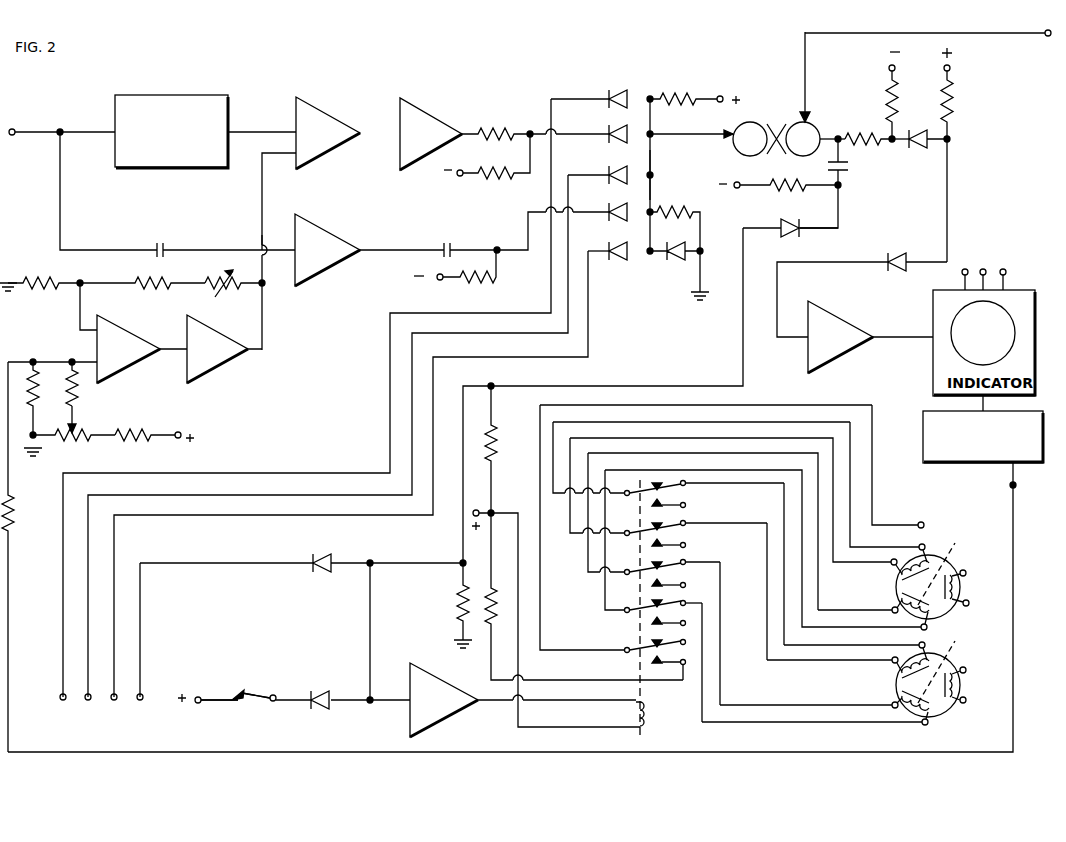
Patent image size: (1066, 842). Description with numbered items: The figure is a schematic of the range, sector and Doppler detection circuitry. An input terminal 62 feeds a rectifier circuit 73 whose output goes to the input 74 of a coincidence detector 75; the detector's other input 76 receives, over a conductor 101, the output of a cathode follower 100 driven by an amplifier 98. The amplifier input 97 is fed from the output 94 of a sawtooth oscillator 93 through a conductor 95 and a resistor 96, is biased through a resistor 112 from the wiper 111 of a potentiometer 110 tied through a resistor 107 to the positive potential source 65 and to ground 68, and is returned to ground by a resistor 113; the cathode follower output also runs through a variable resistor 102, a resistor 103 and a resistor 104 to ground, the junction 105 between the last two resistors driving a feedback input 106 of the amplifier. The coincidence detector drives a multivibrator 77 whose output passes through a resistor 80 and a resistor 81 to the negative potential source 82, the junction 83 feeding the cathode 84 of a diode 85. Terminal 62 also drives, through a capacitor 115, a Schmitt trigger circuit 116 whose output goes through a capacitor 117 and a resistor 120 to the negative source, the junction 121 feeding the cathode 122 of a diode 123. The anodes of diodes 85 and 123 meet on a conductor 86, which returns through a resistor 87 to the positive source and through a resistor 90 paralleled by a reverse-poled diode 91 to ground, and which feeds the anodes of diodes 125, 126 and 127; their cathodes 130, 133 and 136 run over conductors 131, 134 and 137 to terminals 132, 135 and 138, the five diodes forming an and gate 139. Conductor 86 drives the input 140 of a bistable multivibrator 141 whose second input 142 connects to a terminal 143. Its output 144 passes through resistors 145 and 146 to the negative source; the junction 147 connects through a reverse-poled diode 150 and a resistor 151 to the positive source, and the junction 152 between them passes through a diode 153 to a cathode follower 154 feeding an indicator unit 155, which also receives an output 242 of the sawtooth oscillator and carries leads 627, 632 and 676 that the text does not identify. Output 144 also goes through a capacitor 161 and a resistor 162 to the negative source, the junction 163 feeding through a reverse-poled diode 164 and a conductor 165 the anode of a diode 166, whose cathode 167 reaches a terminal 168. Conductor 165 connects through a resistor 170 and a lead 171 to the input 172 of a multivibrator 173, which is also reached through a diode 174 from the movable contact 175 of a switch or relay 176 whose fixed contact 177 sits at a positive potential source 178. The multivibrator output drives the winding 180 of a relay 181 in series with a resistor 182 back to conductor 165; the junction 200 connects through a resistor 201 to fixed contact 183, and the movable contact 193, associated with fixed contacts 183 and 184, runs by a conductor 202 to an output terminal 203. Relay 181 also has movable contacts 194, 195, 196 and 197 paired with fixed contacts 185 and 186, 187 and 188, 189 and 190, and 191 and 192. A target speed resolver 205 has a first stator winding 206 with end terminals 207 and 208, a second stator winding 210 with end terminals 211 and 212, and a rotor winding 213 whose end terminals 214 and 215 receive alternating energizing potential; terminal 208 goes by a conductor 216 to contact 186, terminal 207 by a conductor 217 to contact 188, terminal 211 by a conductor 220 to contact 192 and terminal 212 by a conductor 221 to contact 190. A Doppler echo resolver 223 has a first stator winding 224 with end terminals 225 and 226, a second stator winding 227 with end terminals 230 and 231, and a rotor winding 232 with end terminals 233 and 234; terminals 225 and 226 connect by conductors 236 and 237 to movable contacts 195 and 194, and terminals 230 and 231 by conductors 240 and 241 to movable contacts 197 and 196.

The terminal 62 is at (14, 128).
The rectifier circuit 73 is at (147, 95).
The input 74 is at (290, 128).
The coincidence detector 75 is at (298, 80).
The input 76 is at (294, 160).
The multivibrator 77 is at (420, 112).
The resistor 80 is at (495, 128).
The resistor 81 is at (494, 180).
The negative potential source 82 is at (890, 68).
The junction 83 is at (530, 130).
The cathode 84 is at (598, 132).
The diode 85 is at (614, 126).
The conductor 86 is at (674, 124).
The resistor 87 is at (674, 96).
The resistor 90 is at (669, 212).
The reverse-poled diode 91 is at (680, 260).
The sawtooth oscillator 93 is at (922, 432).
The output 94 is at (1010, 486).
The conductor 95 is at (1014, 535).
The resistor 96 is at (12, 510).
The input 97 is at (95, 358).
The amplifier 98 is at (138, 333).
The cathode follower 100 is at (207, 330).
The conductor 101 is at (260, 240).
The variable resistor 102 is at (213, 280).
The resistor 103 is at (142, 274).
The resistor 104 is at (45, 288).
The junction 105 is at (80, 280).
The feedback input 106 is at (84, 325).
The resistor 107 is at (126, 430).
The potentiometer 110 is at (72, 446).
The wiper 111 is at (74, 418).
The resistor 112 is at (76, 406).
The resistor 113 is at (38, 396).
The capacitor 115 is at (157, 248).
The Schmitt trigger circuit 116 is at (322, 300).
The capacitor 117 is at (444, 243).
The resistor 120 is at (474, 278).
The junction 121 is at (498, 246).
The cathode 122 is at (604, 212).
The diode 123 is at (622, 210).
The diode 125 is at (636, 90).
The diode 126 is at (622, 172).
The diode 127 is at (622, 250).
The cathode 130 is at (607, 99).
The conductor 131 is at (551, 282).
The terminal 132 is at (60, 700).
The cathode 133 is at (603, 172).
The conductor 134 is at (473, 344).
The terminal 135 is at (85, 701).
The cathode 136 is at (603, 251).
The conductor 137 is at (453, 362).
The terminal 138 is at (114, 701).
The and gate 139 is at (669, 175).
The input 140 is at (734, 144).
The bistable multivibrator 141 is at (766, 124).
The second input 142 is at (808, 112).
The terminal 143 is at (1046, 38).
The output 144 is at (842, 145).
The resistor 145 is at (868, 136).
The resistor 146 is at (887, 95).
The junction 147 is at (892, 144).
The reverse poled diode 150 is at (920, 132).
The resistor 151 is at (951, 90).
The junction 152 is at (948, 143).
The diode 153 is at (888, 250).
The cathode follower 154 is at (822, 304).
The indicator unit 155 is at (930, 325).
The capacitor 161 is at (843, 173).
The resistor 162 is at (782, 183).
The junction 163 is at (842, 192).
The reverse poled diode 164 is at (782, 218).
The conductor 165 is at (708, 380).
The diode 166 is at (318, 555).
The cathode 167 is at (312, 565).
The terminal 168 is at (142, 692).
The resistor 170 is at (460, 590).
The conductor 171 is at (351, 631).
The input 172 is at (368, 705).
The multivibrator 173 is at (458, 712).
The diode 174 is at (315, 690).
The movable contact 175 is at (260, 692).
The switch or relay 176 is at (236, 712).
The fixed contact 177 is at (230, 693).
The positive potential source 178 is at (197, 704).
The relay winding 180 is at (650, 720).
The relay 181 is at (608, 607).
The resistor 182 is at (510, 438).
The fixed contact 183 is at (673, 658).
The fixed contact 184 is at (680, 640).
The fixed contact 185 is at (668, 624).
The fixed contact 186 is at (685, 602).
The fixed contact 187 is at (685, 584).
The fixed contact 188 is at (686, 560).
The fixed contact 189 is at (686, 543).
The fixed contact 190 is at (690, 522).
The fixed contact 191 is at (676, 507).
The fixed contact 192 is at (686, 486).
The movable contact 193 is at (632, 655).
The movable contact 194 is at (636, 612).
The movable contact 195 is at (632, 572).
The movable contact 196 is at (638, 533).
The movable contact 197 is at (650, 488).
The junction 200 is at (495, 510).
The resistor 201 is at (487, 628).
The conductor 202 is at (540, 560).
The output terminal 203 is at (922, 505).
The target speed resolver 205 is at (944, 714).
The first stator winding 206 is at (900, 696).
The end terminal 207 is at (893, 708).
The end terminal 208 is at (923, 726).
The second stator winding 210 is at (912, 652).
The end terminal 211 is at (918, 644).
The end terminal 212 is at (893, 668).
The rotor winding 213 is at (955, 655).
The end terminal 214 is at (970, 685).
The end terminal 215 is at (966, 701).
The conductor 216 is at (763, 728).
The conductor 217 is at (760, 700).
The conductor 220 is at (838, 645).
The conductor 221 is at (762, 636).
The Doppler echo resolver 223 is at (945, 615).
The first stator winding 224 is at (900, 592).
The end terminal 225 is at (892, 610).
The end terminal 226 is at (921, 626).
The second stator winding 227 is at (932, 560).
The end terminal 230 is at (920, 545).
The end terminal 231 is at (892, 560).
The rotor winding 232 is at (957, 585).
The end terminal 233 is at (968, 604).
The end terminal 234 is at (972, 566).
The conductor 236 is at (822, 600).
The conductor 237 is at (848, 633).
The conductor 240 is at (735, 407).
The conductor 241 is at (752, 424).
The output 242 is at (937, 398).
The indicator terminal 627 is at (965, 268).
The indicator terminal 632 is at (983, 269).
The indicator terminal 676 is at (1005, 268).
The positive potential source 65 is at (722, 95).
The ground 68 is at (699, 302).